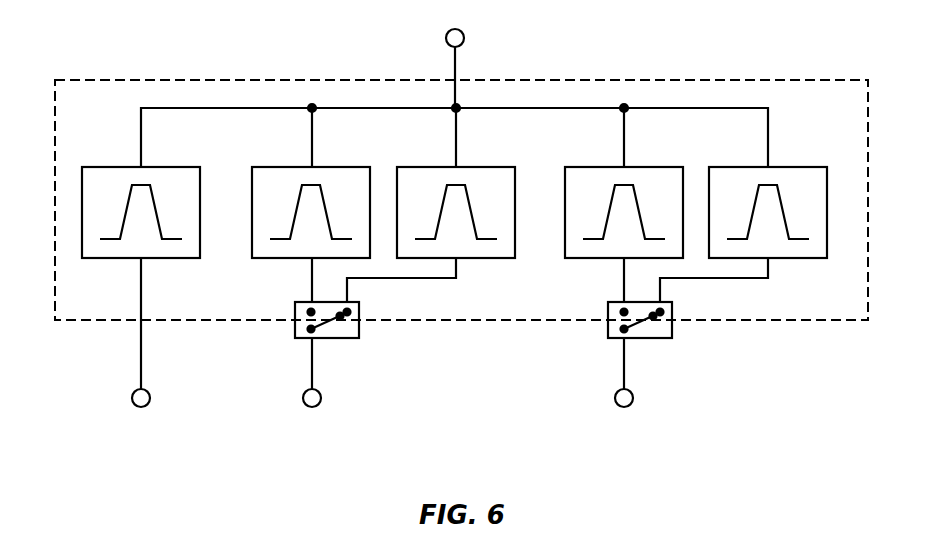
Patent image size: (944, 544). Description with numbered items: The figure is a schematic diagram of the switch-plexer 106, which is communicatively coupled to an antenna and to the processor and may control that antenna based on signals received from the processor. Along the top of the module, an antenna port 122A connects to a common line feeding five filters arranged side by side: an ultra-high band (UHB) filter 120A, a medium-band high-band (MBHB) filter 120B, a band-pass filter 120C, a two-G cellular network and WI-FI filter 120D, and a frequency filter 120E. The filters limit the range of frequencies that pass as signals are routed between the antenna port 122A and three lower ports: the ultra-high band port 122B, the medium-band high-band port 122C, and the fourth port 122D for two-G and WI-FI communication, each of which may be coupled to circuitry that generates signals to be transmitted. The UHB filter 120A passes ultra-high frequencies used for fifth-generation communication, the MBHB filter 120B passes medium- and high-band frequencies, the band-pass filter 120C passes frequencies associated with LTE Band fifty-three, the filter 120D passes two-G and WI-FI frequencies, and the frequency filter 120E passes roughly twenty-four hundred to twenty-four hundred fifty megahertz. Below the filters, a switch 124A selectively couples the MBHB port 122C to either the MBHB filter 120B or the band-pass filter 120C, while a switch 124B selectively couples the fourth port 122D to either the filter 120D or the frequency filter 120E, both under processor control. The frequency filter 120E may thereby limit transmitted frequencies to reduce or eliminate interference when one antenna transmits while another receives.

The switch-plexer 106 is at (467, 321).
The ultra-high band (UHB) filter 120A is at (173, 258).
The medium-band high-band (MBHB) filter 120B is at (277, 258).
The band-pass filter 120C is at (490, 258).
The 2G cellular network and WI-FI filter 120D is at (593, 258).
The frequency filter 120E is at (805, 258).
The antenna port 122A is at (446, 36).
The ultra-high band port 122B is at (132, 396).
The medium-band high-band port 122C is at (303, 396).
The fourth port 122D is at (615, 396).
The switch 124A is at (348, 338).
The switch 124B is at (658, 338).